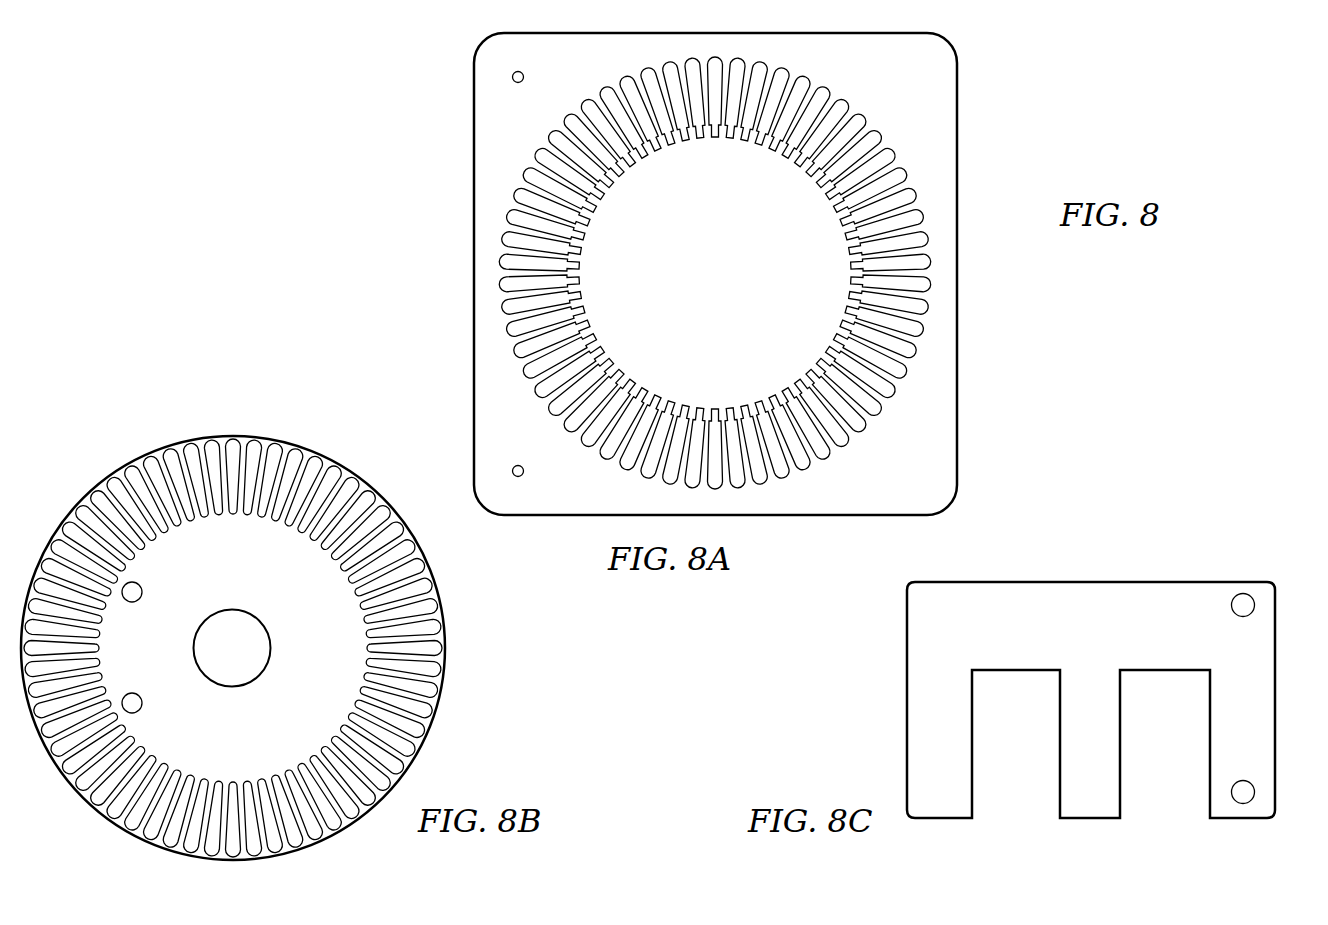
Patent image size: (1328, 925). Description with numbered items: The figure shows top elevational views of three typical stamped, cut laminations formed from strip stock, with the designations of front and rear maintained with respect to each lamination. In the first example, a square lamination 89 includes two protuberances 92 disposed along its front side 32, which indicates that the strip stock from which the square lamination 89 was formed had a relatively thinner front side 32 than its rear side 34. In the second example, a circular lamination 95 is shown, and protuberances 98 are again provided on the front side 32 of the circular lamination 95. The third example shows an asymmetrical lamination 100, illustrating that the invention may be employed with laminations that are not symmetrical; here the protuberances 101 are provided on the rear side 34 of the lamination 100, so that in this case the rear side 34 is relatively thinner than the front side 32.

In FIG. 8A, the front side 32 is at (472, 147).
In FIG. 8B, the front side 32 is at (47, 539).
In FIG. 8C, the front side 32 is at (904, 656).
In FIG. 8A, the rear side 34 is at (958, 157).
In FIG. 8B, the rear side 34 is at (446, 648).
In FIG. 8C, the rear side 34 is at (1281, 672).
In FIG. 8A, the square lamination 89 is at (847, 48).
In FIG. 8A, the protuberances 92 is at (513, 73).
In FIG. 8B, the circular lamination 95 is at (172, 428).
In FIG. 8B, the protuberances 98 is at (140, 600).
In FIG. 8C, the lamination 100 is at (1149, 557).
In FIG. 8C, the protuberances 101 is at (1240, 593).